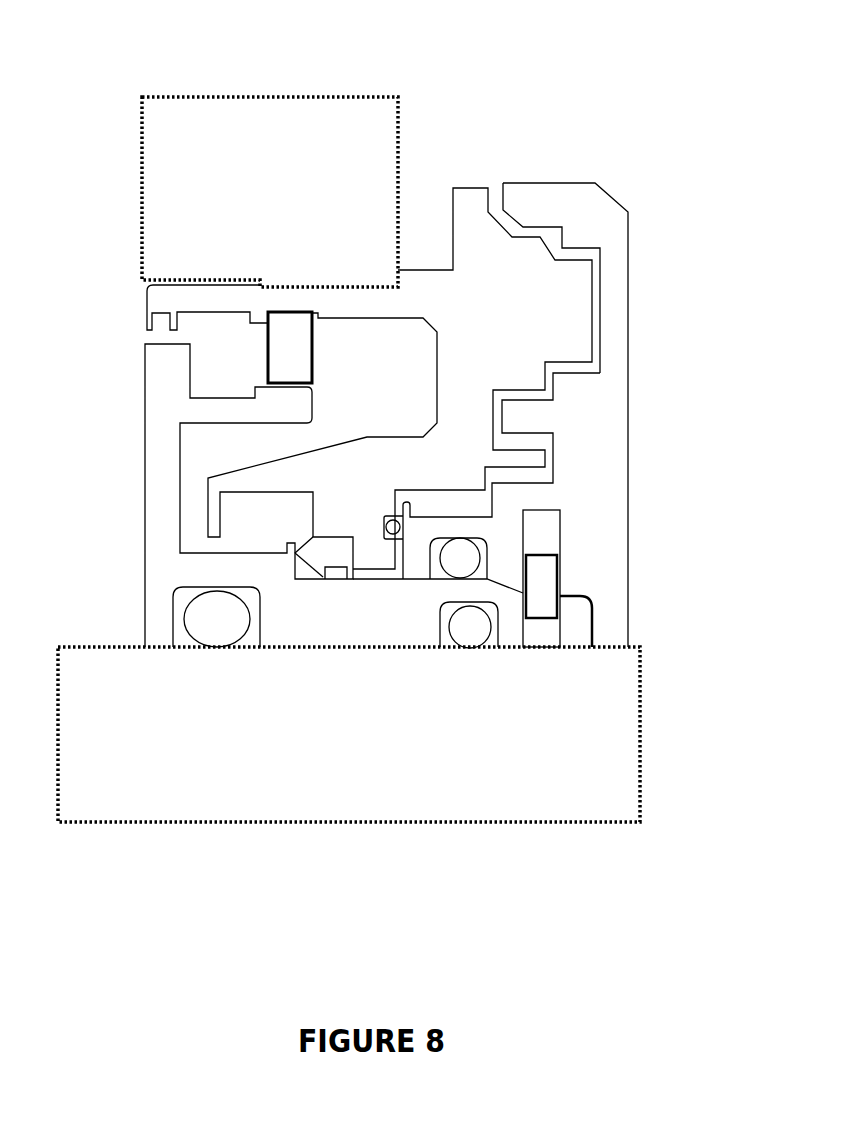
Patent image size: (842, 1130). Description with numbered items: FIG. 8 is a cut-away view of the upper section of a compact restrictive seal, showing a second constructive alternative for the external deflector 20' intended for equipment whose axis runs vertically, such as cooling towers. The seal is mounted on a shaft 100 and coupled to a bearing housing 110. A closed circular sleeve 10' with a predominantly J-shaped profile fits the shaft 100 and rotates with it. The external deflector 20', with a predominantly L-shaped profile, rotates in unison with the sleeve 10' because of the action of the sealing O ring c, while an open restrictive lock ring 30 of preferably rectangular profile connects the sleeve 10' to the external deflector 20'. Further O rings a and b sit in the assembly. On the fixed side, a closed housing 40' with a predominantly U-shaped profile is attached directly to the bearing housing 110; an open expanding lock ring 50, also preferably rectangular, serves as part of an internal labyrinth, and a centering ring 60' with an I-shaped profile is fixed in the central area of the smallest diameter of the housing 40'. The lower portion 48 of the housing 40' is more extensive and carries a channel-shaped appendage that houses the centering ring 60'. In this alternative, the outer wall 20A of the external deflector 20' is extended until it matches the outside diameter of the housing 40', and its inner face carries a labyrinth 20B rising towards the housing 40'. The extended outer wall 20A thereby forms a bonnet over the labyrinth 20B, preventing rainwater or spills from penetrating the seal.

The bearing housing 110 is at (330, 123).
The shaft 100 is at (607, 727).
The sleeve 10' is at (272, 495).
The external deflector 20' is at (544, 510).
The outer wall 20A is at (593, 208).
The labyrinth 20B is at (547, 240).
The restrictive lock ring 30 is at (542, 585).
The housing 40' is at (472, 343).
The lower portion 48 is at (340, 477).
The expanding lock ring 50 is at (292, 348).
The centering ring 60' is at (324, 717).
The O ring a is at (213, 630).
The O ring b is at (468, 630).
The sealing O ring c is at (455, 560).